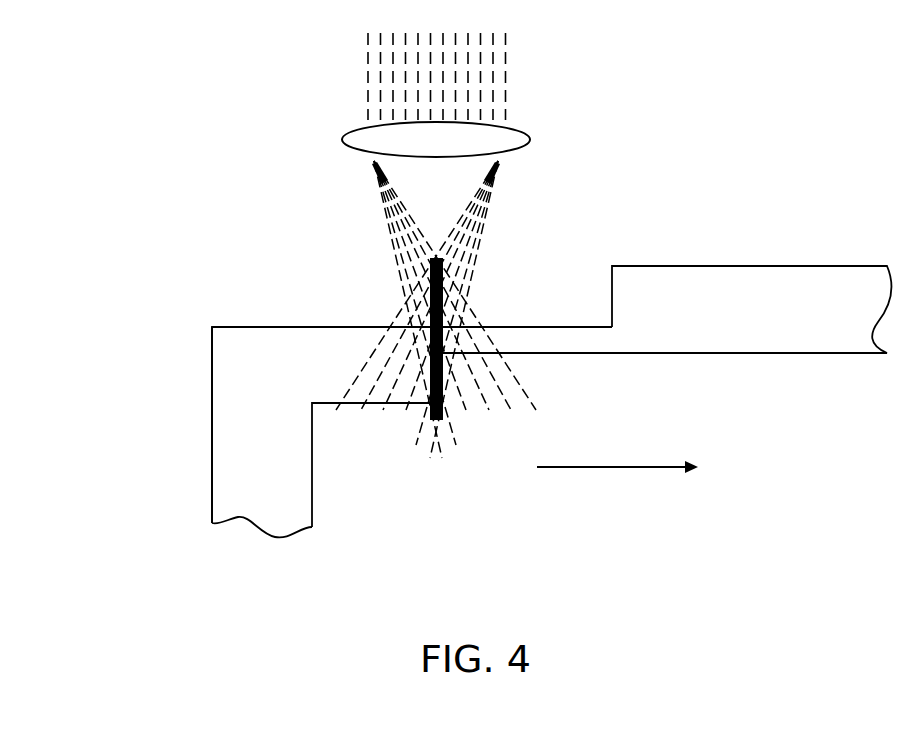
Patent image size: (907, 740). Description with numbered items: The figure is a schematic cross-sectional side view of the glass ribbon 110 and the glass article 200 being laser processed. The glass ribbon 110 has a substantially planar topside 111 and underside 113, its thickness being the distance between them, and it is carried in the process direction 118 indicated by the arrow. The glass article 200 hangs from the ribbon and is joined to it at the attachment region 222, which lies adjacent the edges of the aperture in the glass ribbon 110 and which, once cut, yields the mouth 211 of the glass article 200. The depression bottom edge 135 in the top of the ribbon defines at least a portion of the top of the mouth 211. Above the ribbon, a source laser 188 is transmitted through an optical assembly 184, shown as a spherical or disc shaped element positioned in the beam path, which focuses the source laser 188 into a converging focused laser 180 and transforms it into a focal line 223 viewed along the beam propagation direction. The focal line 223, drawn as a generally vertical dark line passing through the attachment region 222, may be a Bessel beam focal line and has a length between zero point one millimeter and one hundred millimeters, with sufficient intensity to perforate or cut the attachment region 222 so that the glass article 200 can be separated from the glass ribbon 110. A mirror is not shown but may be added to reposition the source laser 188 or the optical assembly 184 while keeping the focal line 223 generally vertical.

The source laser 188 is at (505, 67).
The optical assembly 184 is at (527, 140).
The focused laser beam 180 is at (483, 243).
The focal line 223 is at (455, 291).
The attachment region 222 is at (427, 352).
The glass article 200 is at (180, 488).
The mouth 211 is at (212, 352).
The depression bottom edge 135 is at (325, 327).
The glass ribbon 110 is at (725, 266).
The topside 111 is at (850, 266).
The underside 113 is at (745, 353).
The process direction 118 is at (647, 468).